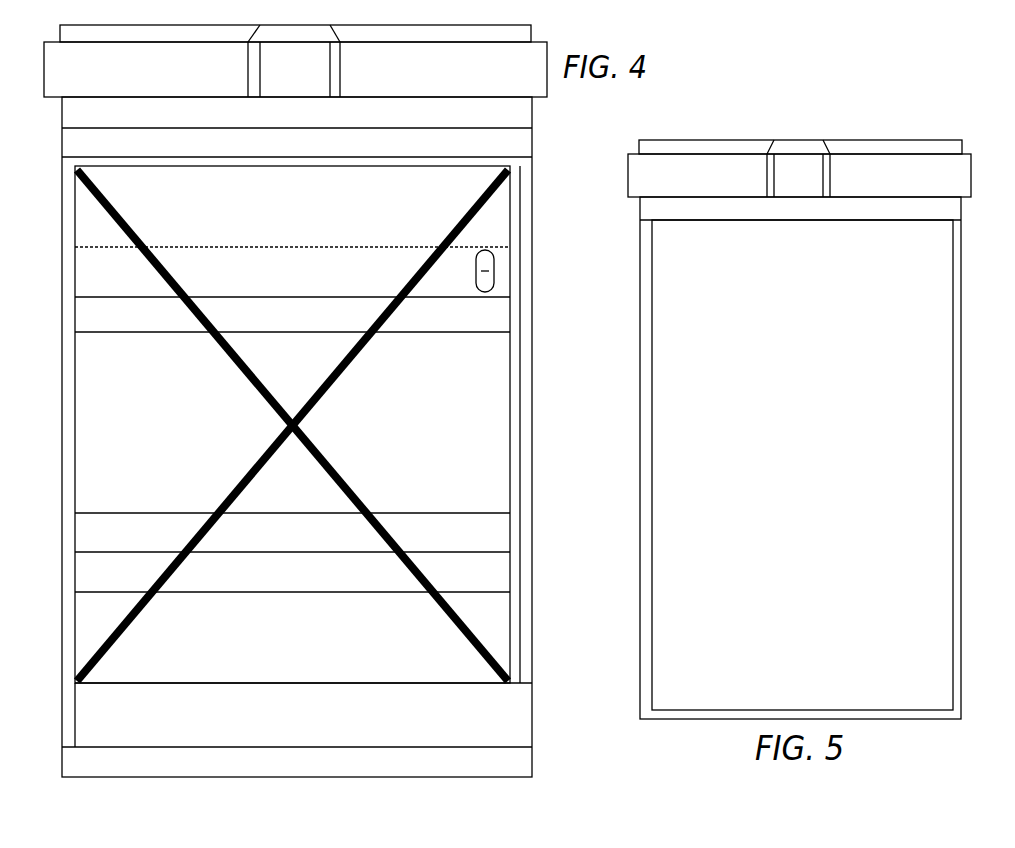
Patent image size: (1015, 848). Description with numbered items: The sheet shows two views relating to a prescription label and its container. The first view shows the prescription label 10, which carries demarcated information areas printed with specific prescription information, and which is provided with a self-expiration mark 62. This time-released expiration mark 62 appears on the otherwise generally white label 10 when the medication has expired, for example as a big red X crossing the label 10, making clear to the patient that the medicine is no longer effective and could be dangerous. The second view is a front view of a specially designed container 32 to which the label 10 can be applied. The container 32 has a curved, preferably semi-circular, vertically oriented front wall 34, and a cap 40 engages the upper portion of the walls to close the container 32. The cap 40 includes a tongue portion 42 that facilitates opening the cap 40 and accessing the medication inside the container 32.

In FIG. 4, the prescription label 10 is at (488, 428).
In FIG. 4, the self-expiration mark 62 is at (480, 210).
In FIG. 5, the container 32 is at (787, 390).
In FIG. 5, the cap 40 is at (799, 142).
In FIG. 5, the tongue portion 42 is at (797, 147).
In FIG. 5, the front wall 34 is at (683, 600).